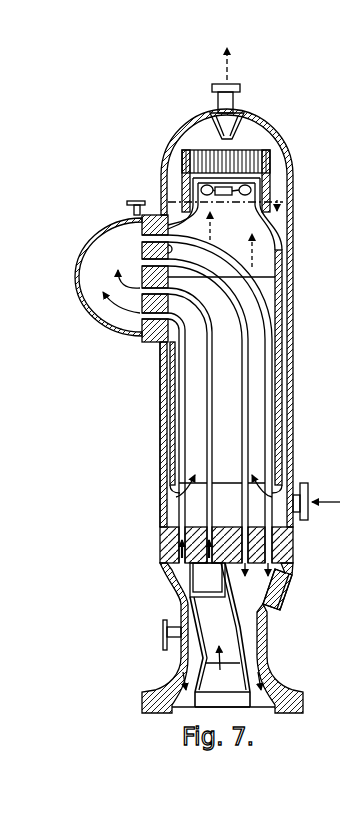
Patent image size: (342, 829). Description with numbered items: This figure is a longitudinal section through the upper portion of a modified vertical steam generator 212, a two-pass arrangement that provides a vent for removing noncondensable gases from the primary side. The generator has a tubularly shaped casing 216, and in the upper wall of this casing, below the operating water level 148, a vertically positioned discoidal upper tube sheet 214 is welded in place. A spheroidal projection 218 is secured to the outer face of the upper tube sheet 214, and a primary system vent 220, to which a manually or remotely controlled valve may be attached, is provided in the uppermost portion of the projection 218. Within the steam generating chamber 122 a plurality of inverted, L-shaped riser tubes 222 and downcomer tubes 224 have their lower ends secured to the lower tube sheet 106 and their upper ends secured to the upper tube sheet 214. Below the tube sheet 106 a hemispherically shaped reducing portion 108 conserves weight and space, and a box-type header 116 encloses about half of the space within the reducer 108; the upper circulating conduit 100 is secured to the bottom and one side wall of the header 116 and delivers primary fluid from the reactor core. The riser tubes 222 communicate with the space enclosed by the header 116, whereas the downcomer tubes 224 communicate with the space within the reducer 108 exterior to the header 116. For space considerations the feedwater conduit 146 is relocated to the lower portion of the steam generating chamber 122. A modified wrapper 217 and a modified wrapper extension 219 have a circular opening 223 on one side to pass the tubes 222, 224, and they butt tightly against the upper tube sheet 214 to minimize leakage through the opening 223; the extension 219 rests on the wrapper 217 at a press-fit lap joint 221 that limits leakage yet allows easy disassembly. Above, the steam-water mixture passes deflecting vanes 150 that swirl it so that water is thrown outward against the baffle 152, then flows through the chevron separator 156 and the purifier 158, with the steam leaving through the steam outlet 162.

The upper circulating conduit 100 is at (243, 645).
The tube sheet 106 is at (160, 548).
The reducing portion 108 is at (167, 576).
The box-type header 116 is at (185, 595).
The steam generating chamber 122 is at (233, 410).
The feedwater conduit 146 is at (293, 490).
The water level 148 is at (278, 199).
The deflecting vanes 150 is at (243, 195).
The baffle 152 is at (287, 163).
The chevron separator 156 is at (190, 164).
The purifier 158 is at (232, 127).
The steam outlet 162 is at (234, 102).
The steam generator 212 is at (328, 383).
The upper tube sheet 214 is at (143, 341).
The casing 216 is at (160, 388).
The modified wrapper 217 is at (279, 410).
The spheroidal projection 218 is at (80, 252).
The modified wrapper extension 219 is at (285, 237).
The primary system vent 220 is at (128, 208).
The joint 221 is at (268, 270).
The riser tubes 222 is at (205, 437).
The wrapper opening 223 is at (142, 247).
The downcomer tubes 224 is at (248, 437).